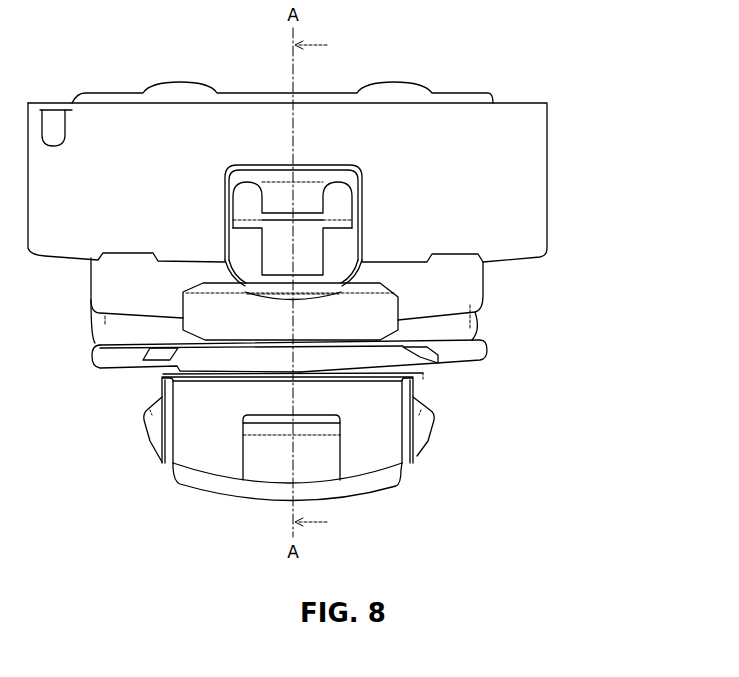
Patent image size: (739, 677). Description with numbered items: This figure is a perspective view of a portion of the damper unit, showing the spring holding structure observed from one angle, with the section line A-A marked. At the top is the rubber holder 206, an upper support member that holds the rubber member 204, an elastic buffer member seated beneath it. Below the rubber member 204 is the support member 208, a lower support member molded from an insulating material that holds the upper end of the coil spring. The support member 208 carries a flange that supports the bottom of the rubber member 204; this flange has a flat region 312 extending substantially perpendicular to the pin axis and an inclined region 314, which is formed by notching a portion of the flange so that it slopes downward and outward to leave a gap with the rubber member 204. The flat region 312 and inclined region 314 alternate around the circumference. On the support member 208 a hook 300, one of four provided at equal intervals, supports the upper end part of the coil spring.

The rubber holder 206 is at (523, 173).
The rubber member 204 is at (481, 307).
The flat region 312 is at (125, 347).
The inclined region 314 is at (410, 358).
The support member 208 is at (289, 463).
The hook 300 is at (262, 465).